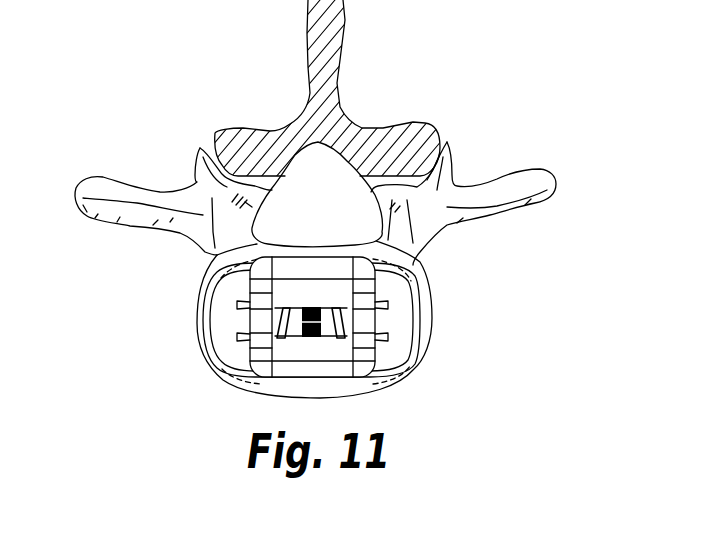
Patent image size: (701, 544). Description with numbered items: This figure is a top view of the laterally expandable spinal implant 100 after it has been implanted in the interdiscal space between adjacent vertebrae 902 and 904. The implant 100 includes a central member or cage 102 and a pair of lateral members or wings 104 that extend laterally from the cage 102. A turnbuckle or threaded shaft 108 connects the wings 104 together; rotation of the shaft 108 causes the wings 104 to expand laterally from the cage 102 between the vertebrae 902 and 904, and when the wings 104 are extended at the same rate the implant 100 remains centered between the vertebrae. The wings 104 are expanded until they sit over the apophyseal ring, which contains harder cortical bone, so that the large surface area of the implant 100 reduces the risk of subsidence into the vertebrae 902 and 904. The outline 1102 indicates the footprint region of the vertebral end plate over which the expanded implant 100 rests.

The laterally expandable spinal implant 100 is at (393, 370).
The central member or cage 102 is at (213, 252).
The lateral members or wings 104 is at (222, 312).
The turnbuckle or threaded shaft 108 is at (290, 338).
The vertebra 902 is at (397, 128).
The vertebra 904 is at (433, 288).
The endplate footprint outline 1102 is at (400, 269).